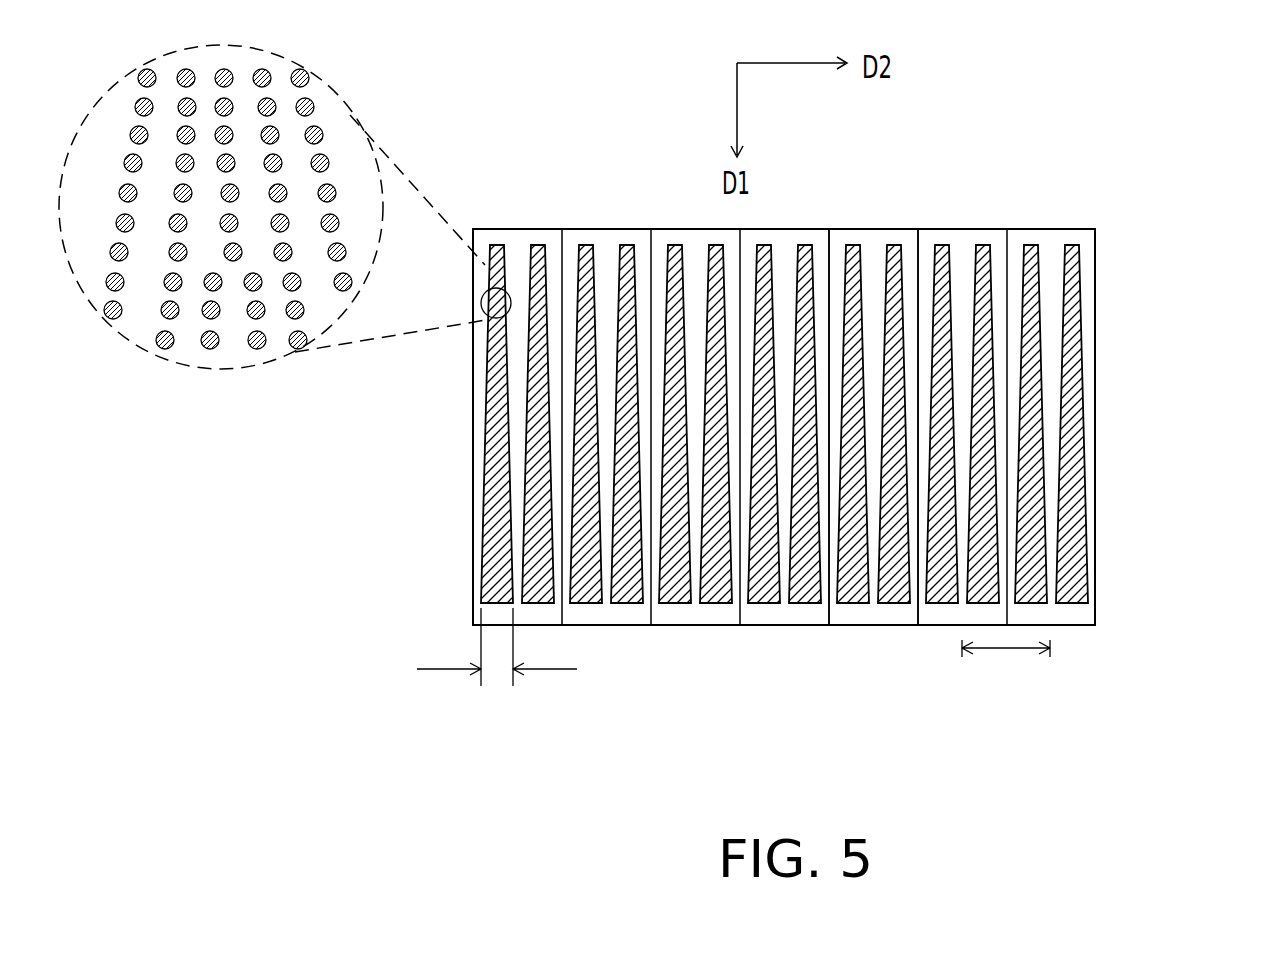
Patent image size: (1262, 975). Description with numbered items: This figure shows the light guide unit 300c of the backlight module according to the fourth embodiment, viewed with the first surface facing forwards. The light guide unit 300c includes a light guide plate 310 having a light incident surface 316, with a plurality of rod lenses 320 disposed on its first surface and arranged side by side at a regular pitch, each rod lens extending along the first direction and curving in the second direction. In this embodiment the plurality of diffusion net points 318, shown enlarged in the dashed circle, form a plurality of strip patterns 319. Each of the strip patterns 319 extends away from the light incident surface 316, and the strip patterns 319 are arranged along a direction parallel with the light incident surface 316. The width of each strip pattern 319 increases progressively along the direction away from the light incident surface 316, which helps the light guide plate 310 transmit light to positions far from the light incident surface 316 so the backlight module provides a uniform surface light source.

The light guide plate 310 is at (1073, 615).
The light incident surface 316 is at (984, 214).
The diffusion net points 318 is at (320, 134).
The strip patterns 319 is at (497, 562).
The rod lenses 320 is at (918, 645).
The light guide unit 300c is at (786, 442).